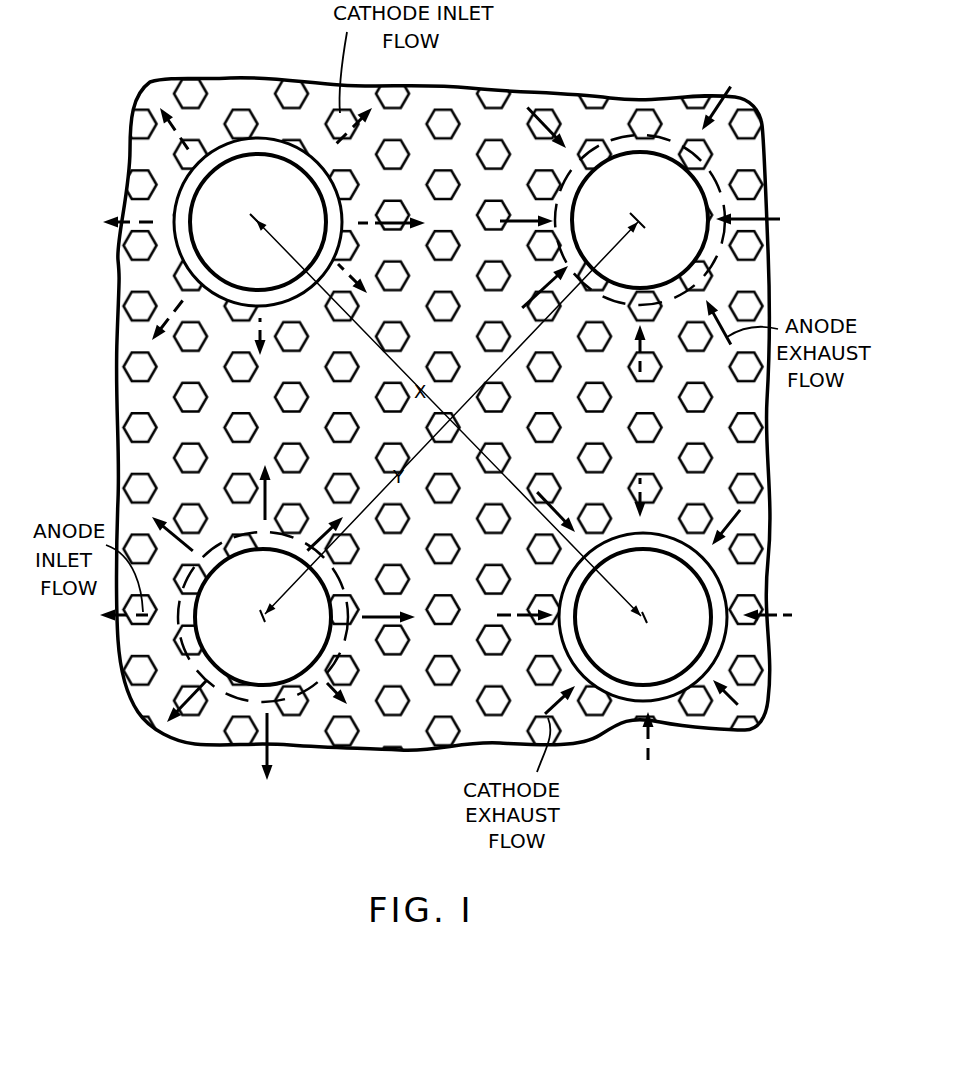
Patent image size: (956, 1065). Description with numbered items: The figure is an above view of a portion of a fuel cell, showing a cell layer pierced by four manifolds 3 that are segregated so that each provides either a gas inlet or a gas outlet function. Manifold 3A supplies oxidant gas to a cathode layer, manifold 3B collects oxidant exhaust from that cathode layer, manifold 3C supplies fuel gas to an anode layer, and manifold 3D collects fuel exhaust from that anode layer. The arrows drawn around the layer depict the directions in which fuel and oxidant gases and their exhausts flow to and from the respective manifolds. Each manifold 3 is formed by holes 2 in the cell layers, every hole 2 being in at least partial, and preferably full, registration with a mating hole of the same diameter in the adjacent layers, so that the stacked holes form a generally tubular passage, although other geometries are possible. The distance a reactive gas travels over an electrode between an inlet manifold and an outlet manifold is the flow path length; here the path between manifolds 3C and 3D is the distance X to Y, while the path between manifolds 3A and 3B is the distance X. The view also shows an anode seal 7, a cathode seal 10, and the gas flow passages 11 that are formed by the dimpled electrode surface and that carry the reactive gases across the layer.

The holes 2 is at (249, 267).
The manifolds 3 is at (641, 241).
The manifold 3A is at (264, 199).
The manifold 3B is at (660, 598).
The manifold 3C is at (265, 599).
The manifold 3D is at (655, 199).
The anode seal 7 is at (182, 258).
The cathode seal 10 is at (733, 265).
The gas flow passages 11 is at (756, 578).